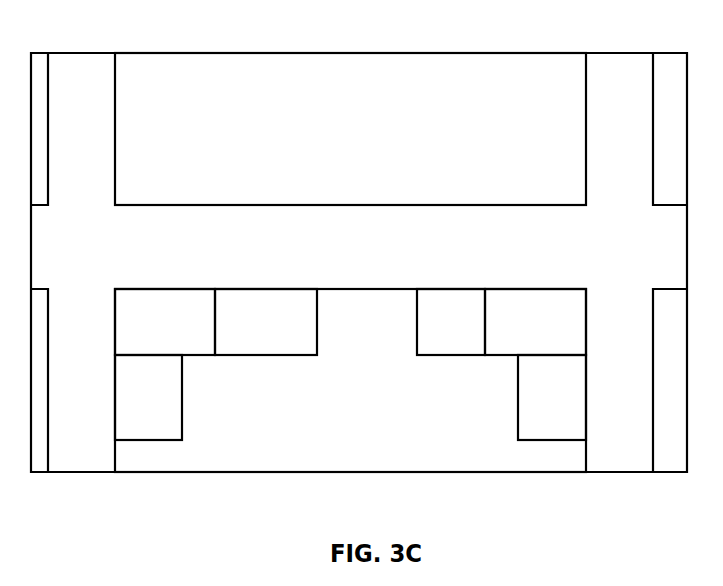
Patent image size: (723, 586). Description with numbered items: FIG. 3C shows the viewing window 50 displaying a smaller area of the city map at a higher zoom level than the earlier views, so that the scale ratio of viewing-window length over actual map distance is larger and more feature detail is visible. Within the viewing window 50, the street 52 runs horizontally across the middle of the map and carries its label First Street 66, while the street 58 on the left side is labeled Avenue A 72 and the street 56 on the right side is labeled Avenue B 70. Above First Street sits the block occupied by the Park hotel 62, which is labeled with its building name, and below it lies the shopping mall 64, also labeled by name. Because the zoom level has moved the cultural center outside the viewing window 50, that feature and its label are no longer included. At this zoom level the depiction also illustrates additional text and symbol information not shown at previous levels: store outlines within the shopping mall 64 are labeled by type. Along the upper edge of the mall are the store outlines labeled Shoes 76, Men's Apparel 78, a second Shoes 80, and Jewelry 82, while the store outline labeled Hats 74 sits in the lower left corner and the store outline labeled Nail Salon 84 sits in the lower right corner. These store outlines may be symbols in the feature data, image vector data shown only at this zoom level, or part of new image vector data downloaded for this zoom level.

The viewing window 50 is at (517, 50).
The street 52 is at (514, 225).
The street 56 is at (630, 70).
The street 58 is at (90, 70).
The Park hotel 62 is at (380, 112).
The shopping mall 64 is at (355, 427).
The First Street 66 is at (410, 246).
The Avenue B 70 is at (630, 155).
The Avenue A 72 is at (95, 155).
The store outline labeled Hats 74 is at (148, 408).
The store outline labeled Shoes 76 is at (182, 335).
The store outline labeled Men's Apparel 78 is at (264, 348).
The store outline labeled Shoes 80 is at (438, 337).
The store outline labeled Jewelry 82 is at (520, 337).
The store outline labeled Nail Salon 84 is at (545, 418).